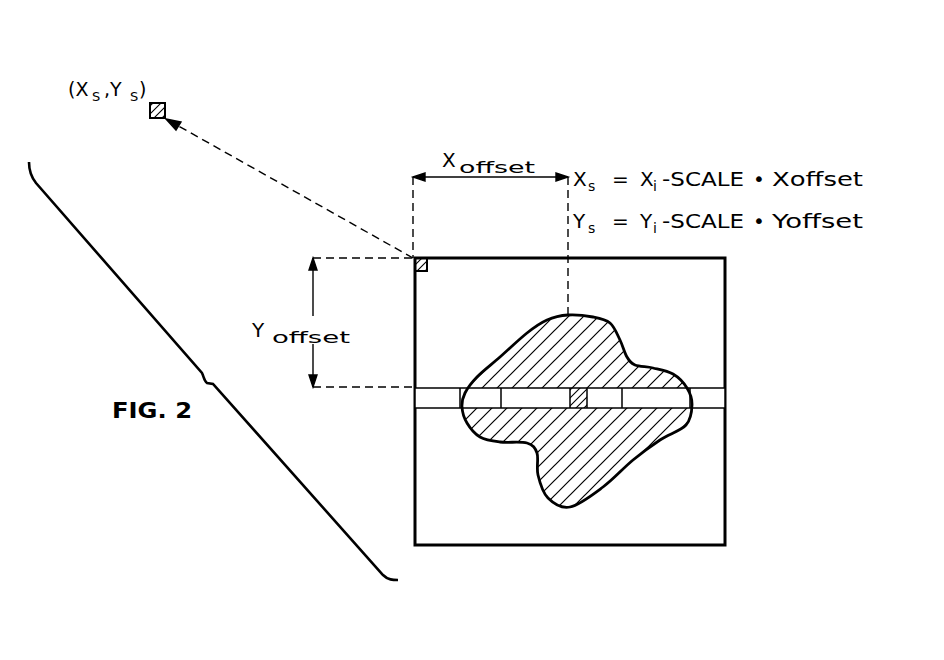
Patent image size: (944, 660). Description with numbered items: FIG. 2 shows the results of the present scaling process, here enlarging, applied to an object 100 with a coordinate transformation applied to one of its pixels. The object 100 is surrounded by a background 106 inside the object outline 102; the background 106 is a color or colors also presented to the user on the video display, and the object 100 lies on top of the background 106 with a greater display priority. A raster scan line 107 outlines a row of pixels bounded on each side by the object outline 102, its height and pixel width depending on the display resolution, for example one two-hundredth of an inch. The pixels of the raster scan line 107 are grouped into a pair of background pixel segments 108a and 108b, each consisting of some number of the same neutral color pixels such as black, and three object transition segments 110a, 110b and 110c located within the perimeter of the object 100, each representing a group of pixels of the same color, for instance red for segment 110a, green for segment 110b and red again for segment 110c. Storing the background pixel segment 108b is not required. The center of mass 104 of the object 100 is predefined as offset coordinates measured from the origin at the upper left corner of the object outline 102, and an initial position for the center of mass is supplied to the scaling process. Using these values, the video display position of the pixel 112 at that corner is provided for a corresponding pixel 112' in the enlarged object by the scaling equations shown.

The object 100 is at (607, 322).
The object outline 102 is at (725, 310).
The center of mass 104 is at (537, 453).
The background 106 is at (673, 290).
The raster scan line 107 is at (725, 400).
The background pixel segment 108a is at (437, 408).
The background pixel segment 108b is at (718, 410).
The object transition segment 110a is at (485, 375).
The object transition segment 110b is at (608, 408).
The object transition segment 110c is at (668, 386).
The pixel 112 is at (436, 299).
The pixel 112' is at (178, 93).